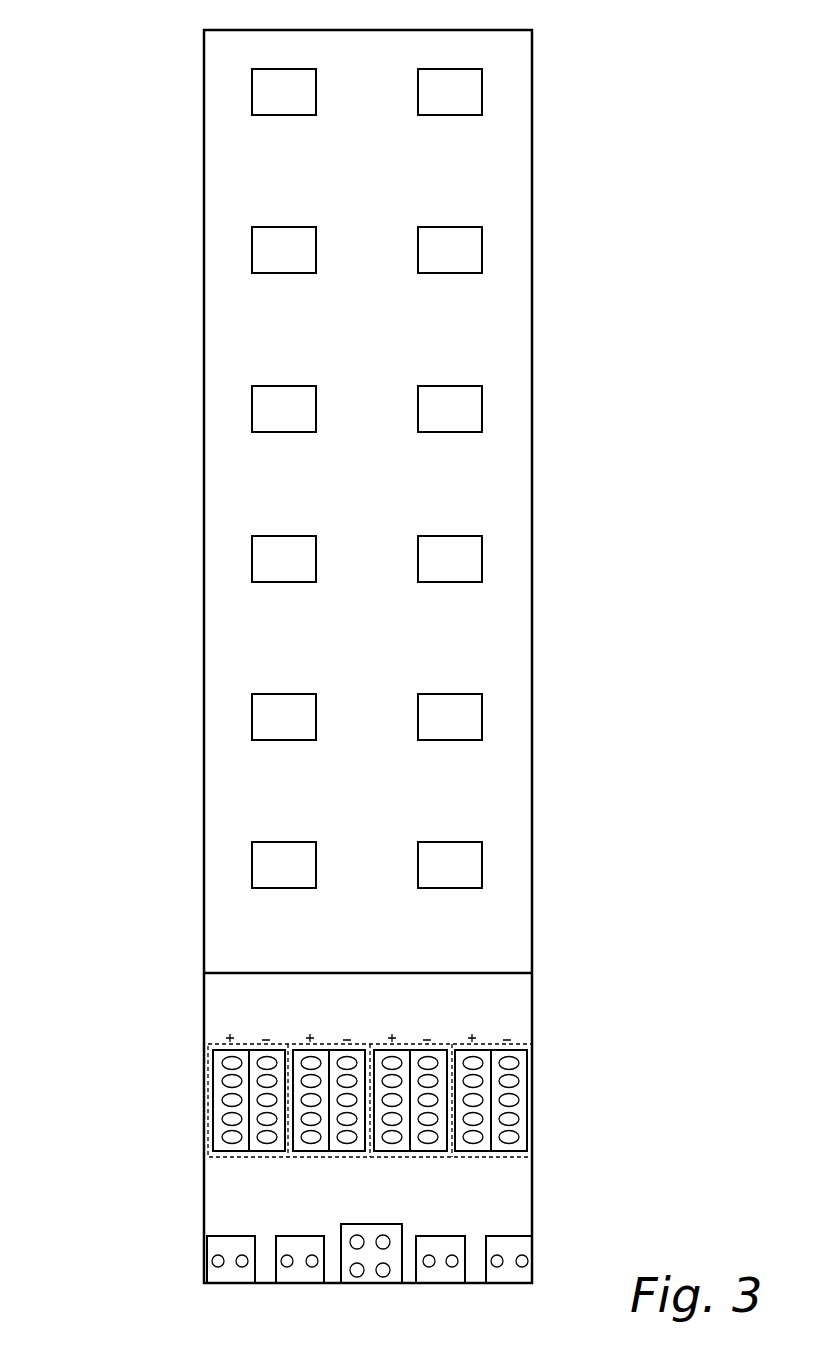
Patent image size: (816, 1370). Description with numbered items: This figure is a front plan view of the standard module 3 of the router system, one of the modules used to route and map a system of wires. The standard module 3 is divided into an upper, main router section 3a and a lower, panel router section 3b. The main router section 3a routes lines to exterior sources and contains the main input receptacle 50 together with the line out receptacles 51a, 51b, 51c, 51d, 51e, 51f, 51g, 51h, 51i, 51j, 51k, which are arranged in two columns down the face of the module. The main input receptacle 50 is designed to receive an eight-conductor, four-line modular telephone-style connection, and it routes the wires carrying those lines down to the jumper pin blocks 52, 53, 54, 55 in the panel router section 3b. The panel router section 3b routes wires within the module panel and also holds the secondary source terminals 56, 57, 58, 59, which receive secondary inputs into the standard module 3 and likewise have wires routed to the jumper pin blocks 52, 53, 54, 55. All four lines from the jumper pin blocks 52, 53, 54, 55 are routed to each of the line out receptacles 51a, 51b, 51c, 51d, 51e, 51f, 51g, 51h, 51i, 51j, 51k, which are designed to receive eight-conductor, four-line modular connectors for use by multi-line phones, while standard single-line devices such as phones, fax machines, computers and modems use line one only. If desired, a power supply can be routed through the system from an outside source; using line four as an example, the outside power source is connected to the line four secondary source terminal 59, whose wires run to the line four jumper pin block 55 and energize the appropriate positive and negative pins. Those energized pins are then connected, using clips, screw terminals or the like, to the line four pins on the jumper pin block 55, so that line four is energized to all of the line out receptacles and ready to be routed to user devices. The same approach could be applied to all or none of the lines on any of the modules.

The standard module 3 is at (135, 67).
The main router section 3a is at (173, 478).
The panel router section 3b is at (193, 1102).
The main input receptacle 50 is at (252, 870).
The line out receptacle 51a is at (252, 98).
The line out receptacle 51b is at (482, 96).
The line out receptacle 51c is at (252, 256).
The line out receptacle 51d is at (482, 254).
The line out receptacle 51e is at (252, 412).
The line out receptacle 51f is at (482, 408).
The line out receptacle 51g is at (252, 566).
The line out receptacle 51h is at (482, 563).
The line out receptacle 51i is at (252, 714).
The line out receptacle 51j is at (482, 710).
The line out receptacle 51k is at (482, 868).
The jumper pin block 52 is at (233, 1158).
The jumper pin block 53 is at (316, 1158).
The jumper pin block 54 is at (398, 1158).
The line four jumper pin block 55 is at (475, 1158).
The secondary source terminal 56 is at (228, 1284).
The secondary source terminal 57 is at (300, 1284).
The secondary source terminal 58 is at (437, 1284).
The line four secondary source terminal 59 is at (510, 1284).